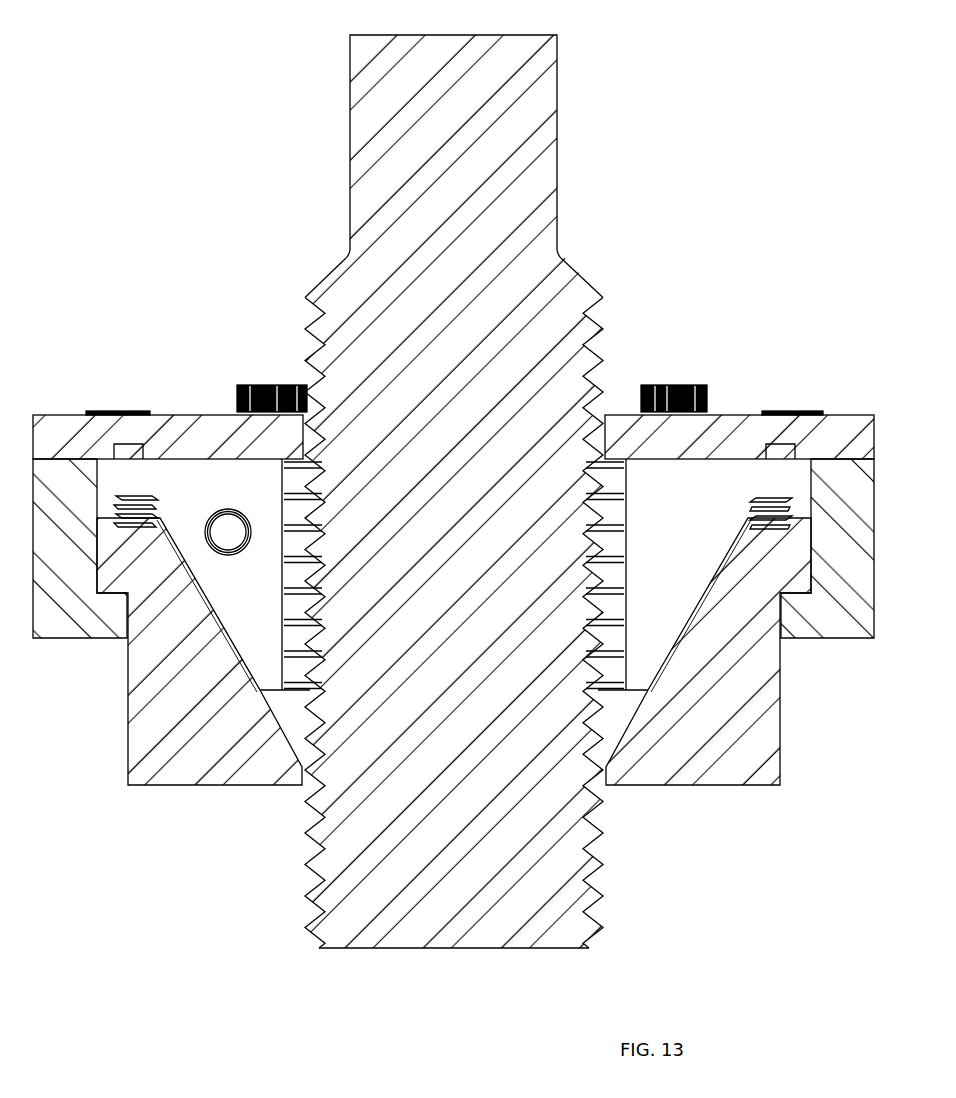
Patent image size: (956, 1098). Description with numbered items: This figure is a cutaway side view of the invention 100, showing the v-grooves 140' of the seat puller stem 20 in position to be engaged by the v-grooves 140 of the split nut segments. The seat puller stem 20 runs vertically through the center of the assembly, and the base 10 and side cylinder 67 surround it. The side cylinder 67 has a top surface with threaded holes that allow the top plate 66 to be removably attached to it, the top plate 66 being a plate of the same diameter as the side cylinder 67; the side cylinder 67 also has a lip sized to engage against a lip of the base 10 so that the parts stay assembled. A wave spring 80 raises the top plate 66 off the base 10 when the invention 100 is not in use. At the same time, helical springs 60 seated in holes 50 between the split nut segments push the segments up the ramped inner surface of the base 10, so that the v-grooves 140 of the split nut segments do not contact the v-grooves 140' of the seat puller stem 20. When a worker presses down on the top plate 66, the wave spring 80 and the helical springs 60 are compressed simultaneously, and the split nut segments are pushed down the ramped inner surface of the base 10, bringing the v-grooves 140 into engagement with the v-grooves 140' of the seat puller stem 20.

The seat puller stem 20 is at (346, 119).
The invention 100 is at (133, 345).
The holes 50 is at (232, 513).
The helical springs 60 is at (228, 556).
The wave spring 80 is at (770, 488).
The top plate 66 is at (843, 415).
The side cylinder 67 is at (857, 648).
The base 10 is at (122, 777).
The v-grooves of the split nut segments 140 is at (664, 678).
The v-grooves of the seat puller stem 140' is at (415, 665).